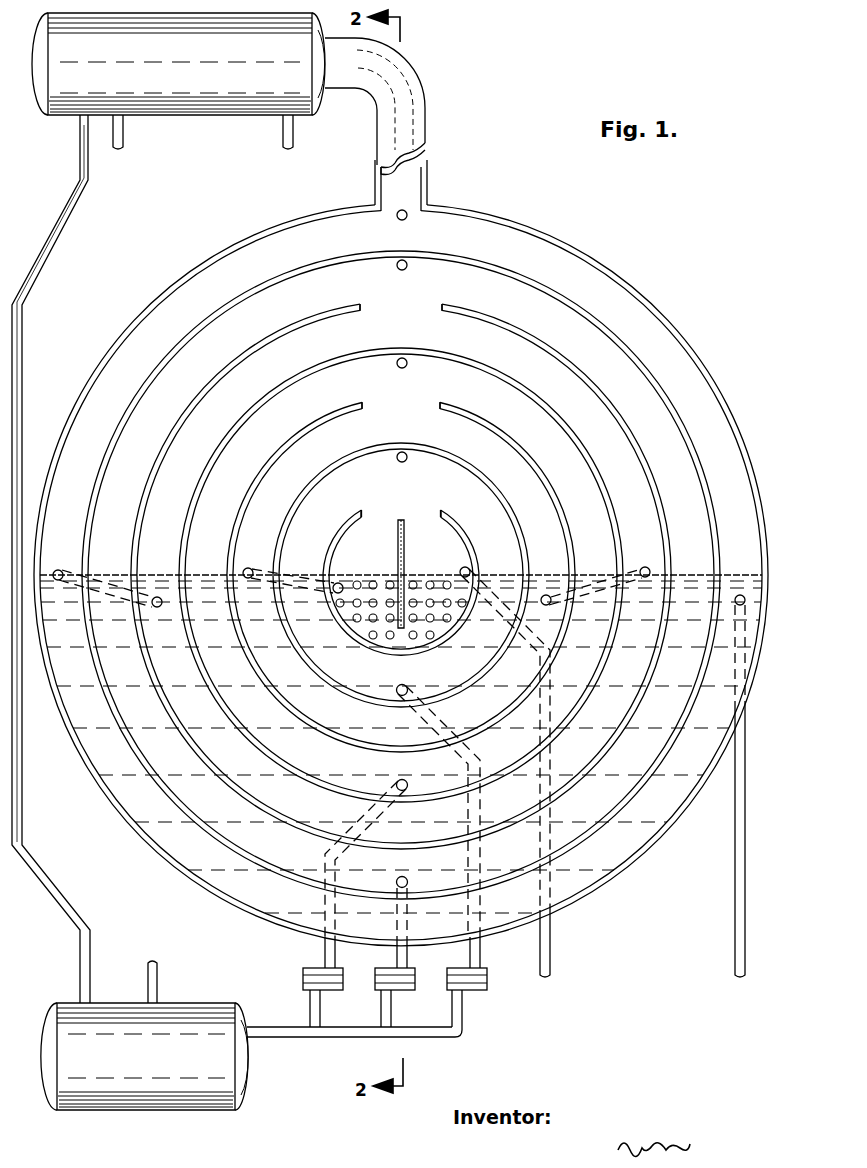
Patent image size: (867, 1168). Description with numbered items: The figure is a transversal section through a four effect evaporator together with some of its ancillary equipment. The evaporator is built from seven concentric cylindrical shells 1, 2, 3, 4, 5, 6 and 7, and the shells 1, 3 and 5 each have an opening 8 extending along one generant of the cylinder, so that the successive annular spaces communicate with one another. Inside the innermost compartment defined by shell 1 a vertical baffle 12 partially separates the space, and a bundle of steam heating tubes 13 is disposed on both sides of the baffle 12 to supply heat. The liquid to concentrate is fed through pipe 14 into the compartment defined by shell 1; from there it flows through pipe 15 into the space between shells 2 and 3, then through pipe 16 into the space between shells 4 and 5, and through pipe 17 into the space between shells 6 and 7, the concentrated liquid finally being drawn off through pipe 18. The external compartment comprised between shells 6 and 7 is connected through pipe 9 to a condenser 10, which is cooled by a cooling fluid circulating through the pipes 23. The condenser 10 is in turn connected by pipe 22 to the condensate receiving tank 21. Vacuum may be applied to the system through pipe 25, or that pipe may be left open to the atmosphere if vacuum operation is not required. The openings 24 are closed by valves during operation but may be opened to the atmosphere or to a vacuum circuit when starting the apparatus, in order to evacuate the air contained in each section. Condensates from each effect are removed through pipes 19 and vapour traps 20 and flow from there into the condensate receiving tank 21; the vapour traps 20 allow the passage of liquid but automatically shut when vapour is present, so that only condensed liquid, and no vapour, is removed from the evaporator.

The concentric cylindrical shell 1 is at (341, 526).
The concentric cylindrical shell 2 is at (298, 503).
The concentric cylindrical shell 3 is at (255, 481).
The concentric cylindrical shell 4 is at (213, 458).
The concentric cylindrical shell 5 is at (173, 434).
The concentric cylindrical shell 6 is at (130, 410).
The concentric cylindrical shell 7 is at (86, 385).
The opening 8 is at (401, 406).
The pipe 9 is at (376, 110).
The condenser 10 is at (178, 64).
The vertical baffle 12 is at (398, 562).
The steam heating tubes 13 is at (435, 574).
The pipe 14 is at (510, 785).
The pipe 15 is at (306, 588).
The pipe 16 is at (600, 590).
The pipe 17 is at (122, 592).
The pipe 18 is at (742, 800).
The pipes 19 is at (402, 879).
The vapour traps 20 is at (342, 978).
The condensate receiving tank 21 is at (144, 1056).
The pipe 22 is at (46, 829).
The pipes 23 is at (118, 148).
The openings 24 is at (414, 341).
The pipe 25 is at (150, 960).